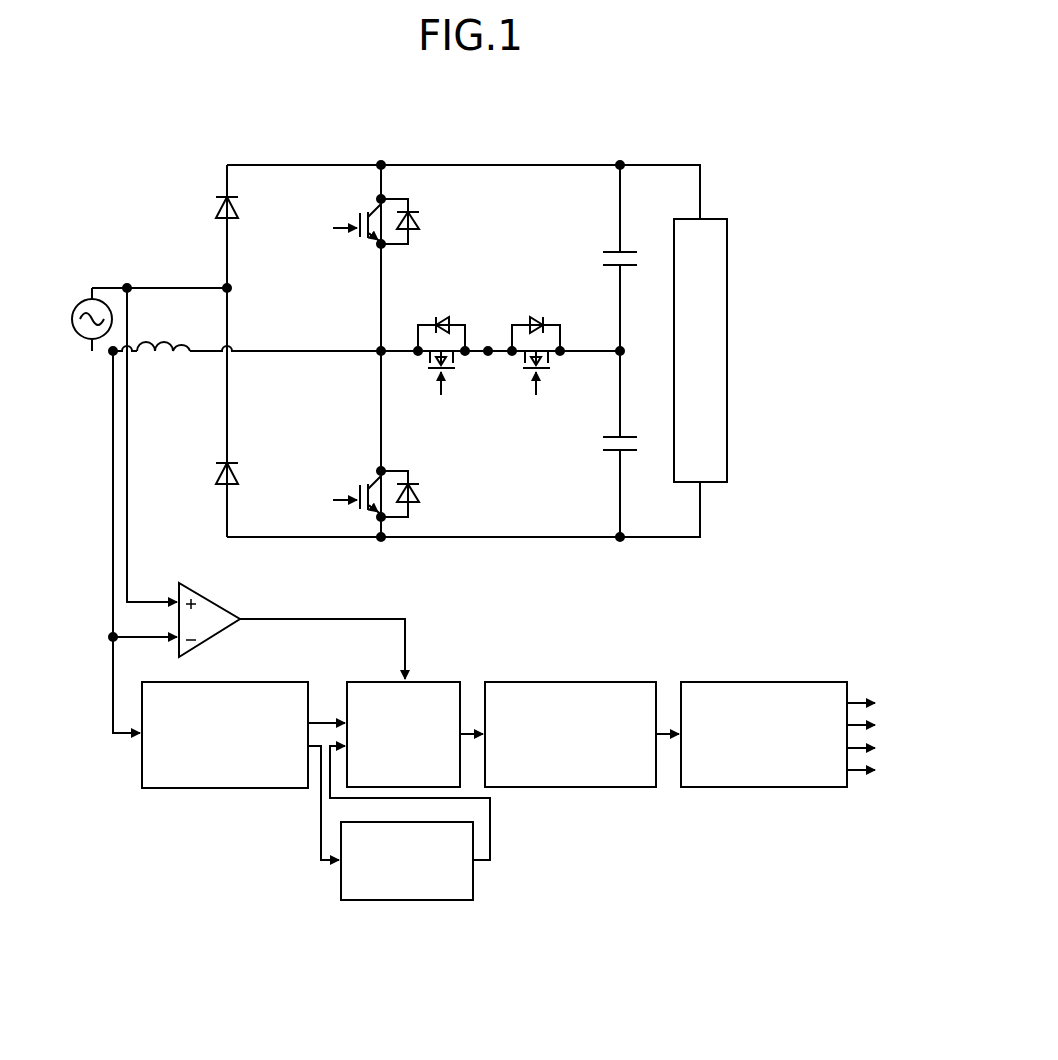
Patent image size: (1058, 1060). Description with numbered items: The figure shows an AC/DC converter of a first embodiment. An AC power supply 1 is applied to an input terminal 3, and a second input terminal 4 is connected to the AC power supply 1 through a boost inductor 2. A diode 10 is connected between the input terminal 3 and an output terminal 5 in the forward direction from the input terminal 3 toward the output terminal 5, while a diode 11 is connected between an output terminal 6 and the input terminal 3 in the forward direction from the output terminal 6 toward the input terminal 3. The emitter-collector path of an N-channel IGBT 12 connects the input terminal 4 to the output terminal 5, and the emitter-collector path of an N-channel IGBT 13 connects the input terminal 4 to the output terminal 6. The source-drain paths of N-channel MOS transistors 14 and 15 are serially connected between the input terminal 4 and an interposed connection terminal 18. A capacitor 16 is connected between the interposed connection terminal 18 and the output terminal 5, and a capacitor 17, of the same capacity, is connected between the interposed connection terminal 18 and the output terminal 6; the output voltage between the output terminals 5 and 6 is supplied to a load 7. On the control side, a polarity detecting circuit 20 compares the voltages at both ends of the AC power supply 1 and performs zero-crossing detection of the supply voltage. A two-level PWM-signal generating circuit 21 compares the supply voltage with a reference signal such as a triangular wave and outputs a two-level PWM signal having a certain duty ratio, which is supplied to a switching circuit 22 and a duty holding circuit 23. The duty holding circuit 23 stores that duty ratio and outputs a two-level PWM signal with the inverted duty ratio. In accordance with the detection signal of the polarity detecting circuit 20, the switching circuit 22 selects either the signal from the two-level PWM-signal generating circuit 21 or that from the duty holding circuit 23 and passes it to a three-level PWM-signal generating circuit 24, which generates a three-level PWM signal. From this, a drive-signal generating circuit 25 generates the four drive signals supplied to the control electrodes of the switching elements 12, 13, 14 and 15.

The AC power supply 1 is at (80, 303).
The boost inductor 2 is at (167, 340).
The input terminal 3 is at (232, 288).
The input terminal 4 is at (378, 349).
The output terminal 5 is at (622, 163).
The output terminal 6 is at (620, 540).
The load 7 is at (728, 300).
The diode 10 is at (238, 200).
The diode 11 is at (238, 466).
The N-channel IGBT 12 is at (368, 243).
The N-channel IGBT 13 is at (365, 485).
The N-channel MOS transistor 14 is at (425, 371).
The N-channel MOS transistor 15 is at (519, 371).
The capacitor 16 is at (636, 259).
The capacitor 17 is at (636, 447).
The interposed connection terminal 18 is at (623, 355).
The polarity detecting circuit 20 is at (210, 598).
The two-level PWM-signal generating circuit 21 is at (252, 681).
The switching circuit 22 is at (422, 681).
The duty holding circuit 23 is at (420, 903).
The three-level PWM-signal generating circuit 24 is at (600, 681).
The drive-signal generating circuit 25 is at (785, 681).